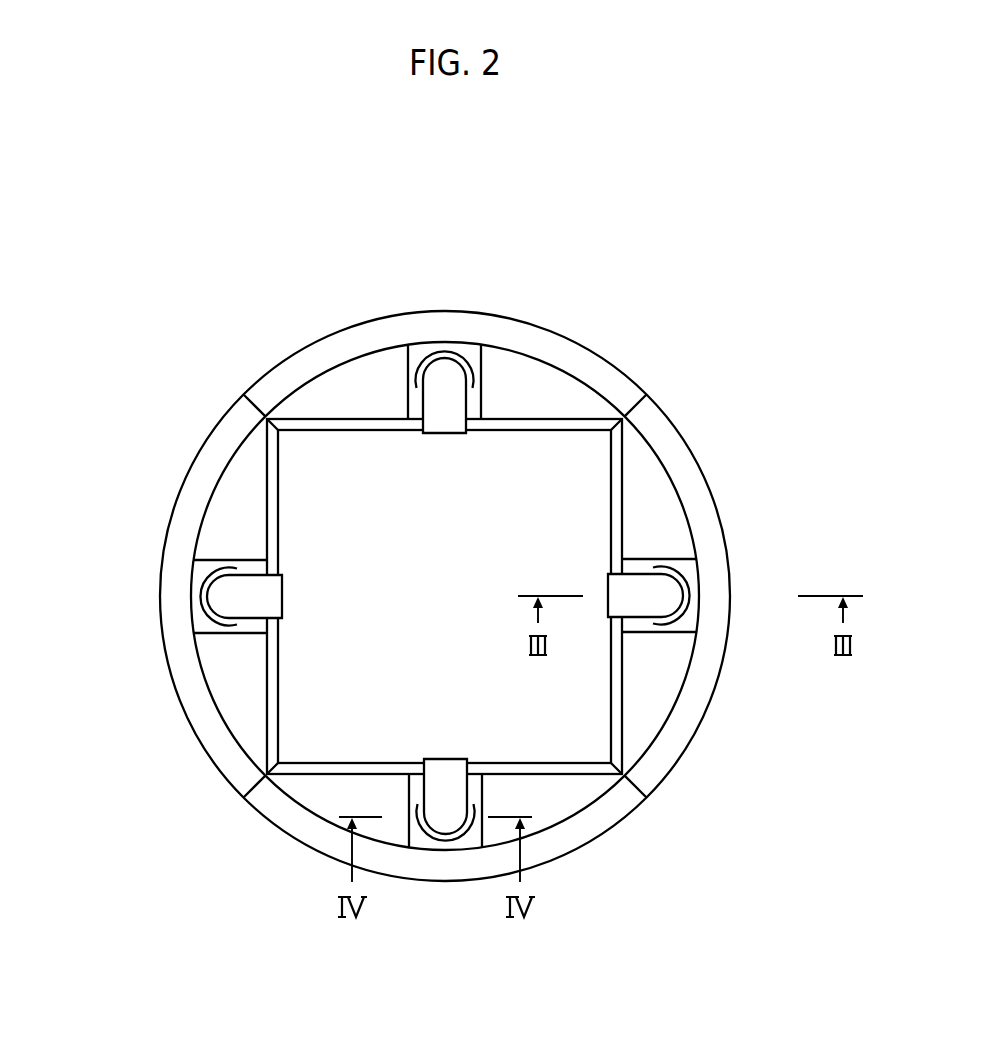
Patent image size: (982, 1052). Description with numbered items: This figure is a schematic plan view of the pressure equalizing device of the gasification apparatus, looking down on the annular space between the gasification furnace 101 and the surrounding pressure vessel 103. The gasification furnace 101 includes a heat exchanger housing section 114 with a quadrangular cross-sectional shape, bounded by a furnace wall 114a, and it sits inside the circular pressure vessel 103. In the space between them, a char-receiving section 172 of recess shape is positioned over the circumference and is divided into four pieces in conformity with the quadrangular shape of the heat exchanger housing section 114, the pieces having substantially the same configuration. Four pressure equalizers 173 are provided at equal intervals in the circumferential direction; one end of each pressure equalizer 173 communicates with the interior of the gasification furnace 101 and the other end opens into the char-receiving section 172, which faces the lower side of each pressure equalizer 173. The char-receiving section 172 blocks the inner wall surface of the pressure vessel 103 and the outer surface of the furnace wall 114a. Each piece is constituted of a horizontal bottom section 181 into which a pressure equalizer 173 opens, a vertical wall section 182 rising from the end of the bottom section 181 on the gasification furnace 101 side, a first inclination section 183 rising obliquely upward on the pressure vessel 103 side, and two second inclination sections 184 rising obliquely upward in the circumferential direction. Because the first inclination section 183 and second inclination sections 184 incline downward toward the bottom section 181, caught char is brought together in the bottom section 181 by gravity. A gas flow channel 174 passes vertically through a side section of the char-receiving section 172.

The gasification furnace 101 is at (613, 732).
The heat exchanger housing section 114 is at (444, 596).
The furnace wall 114a is at (350, 429).
The pressure vessel 103 is at (625, 374).
The char-receiving section 172 is at (650, 487).
The pressure equalizer 173 is at (445, 370).
The gas flow channel 174 is at (560, 775).
The bottom section 181 is at (477, 392).
The vertical wall section 182 is at (577, 397).
The first inclination section 183 is at (418, 322).
The second inclination section 184 is at (370, 372).